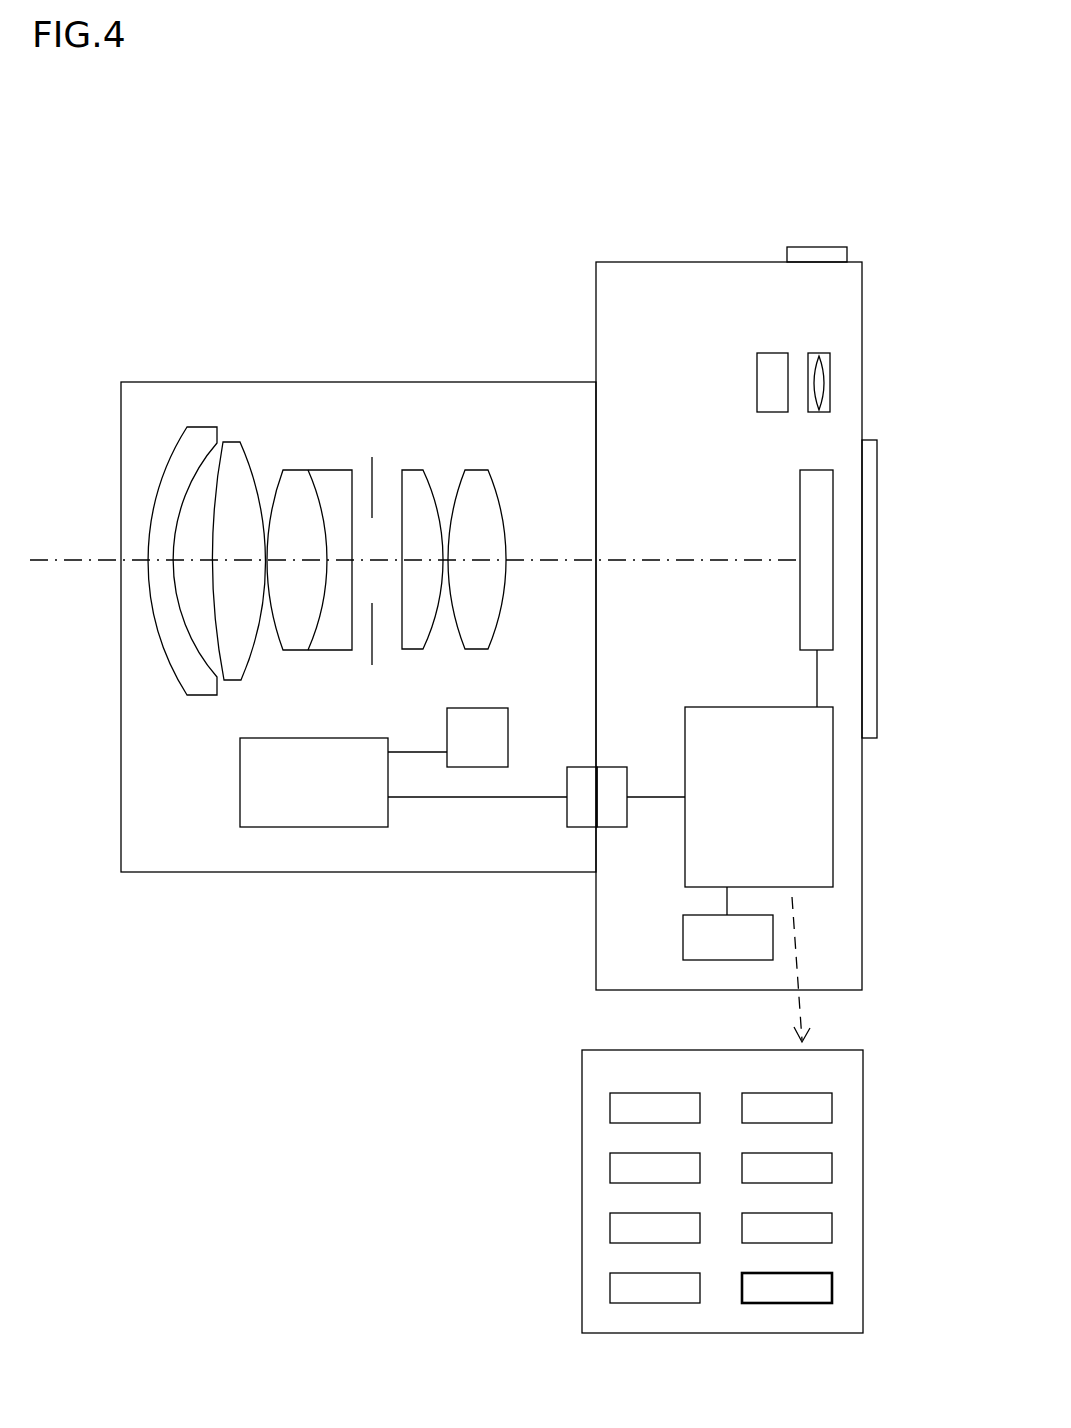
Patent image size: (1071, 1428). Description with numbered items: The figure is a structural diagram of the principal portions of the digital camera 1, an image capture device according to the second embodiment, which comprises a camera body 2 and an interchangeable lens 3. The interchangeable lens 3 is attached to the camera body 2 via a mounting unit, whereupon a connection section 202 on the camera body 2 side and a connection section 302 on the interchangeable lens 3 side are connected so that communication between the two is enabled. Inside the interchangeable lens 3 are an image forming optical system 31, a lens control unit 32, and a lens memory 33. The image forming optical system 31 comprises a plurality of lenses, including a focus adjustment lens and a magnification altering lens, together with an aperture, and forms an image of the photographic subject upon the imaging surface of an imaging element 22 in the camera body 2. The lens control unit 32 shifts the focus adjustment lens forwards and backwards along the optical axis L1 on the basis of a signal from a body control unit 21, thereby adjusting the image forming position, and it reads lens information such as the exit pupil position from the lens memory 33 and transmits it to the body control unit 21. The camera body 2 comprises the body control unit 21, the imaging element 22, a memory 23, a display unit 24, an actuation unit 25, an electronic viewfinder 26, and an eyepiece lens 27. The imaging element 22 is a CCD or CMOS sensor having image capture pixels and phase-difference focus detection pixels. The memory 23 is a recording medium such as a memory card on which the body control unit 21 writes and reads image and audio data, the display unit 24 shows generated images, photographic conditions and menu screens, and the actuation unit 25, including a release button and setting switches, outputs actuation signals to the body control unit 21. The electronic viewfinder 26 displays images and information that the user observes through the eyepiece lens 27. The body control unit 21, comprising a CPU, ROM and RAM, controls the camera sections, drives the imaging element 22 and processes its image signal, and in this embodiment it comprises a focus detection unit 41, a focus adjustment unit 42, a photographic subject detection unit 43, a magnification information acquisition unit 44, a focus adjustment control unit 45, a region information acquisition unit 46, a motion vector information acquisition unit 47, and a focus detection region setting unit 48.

The digital camera 1 is at (407, 175).
The camera body 2 is at (655, 260).
The interchangeable lens 3 is at (207, 382).
The body control unit 21 is at (727, 707).
The imaging element 22 is at (800, 605).
The memory 23 is at (683, 932).
The display unit 24 is at (877, 632).
The actuation unit 25 is at (815, 245).
The electronic viewfinder 26 is at (757, 383).
The eyepiece lens 27 is at (827, 353).
The image forming optical system 31 is at (447, 442).
The lens control unit 32 is at (240, 762).
The lens memory 33 is at (477, 708).
The connection section 202 is at (603, 828).
The connection section 302 is at (582, 828).
The focus detection unit 41 is at (627, 1093).
The focus adjustment unit 42 is at (627, 1153).
The photographic subject detection unit 43 is at (627, 1213).
The magnification information acquisition unit 44 is at (627, 1273).
The focus adjustment control unit 45 is at (758, 1093).
The region information acquisition unit 46 is at (758, 1153).
The motion vector information acquisition unit 47 is at (758, 1213).
The focus detection region setting unit 48 is at (758, 1273).
The optical axis L1 is at (90, 560).